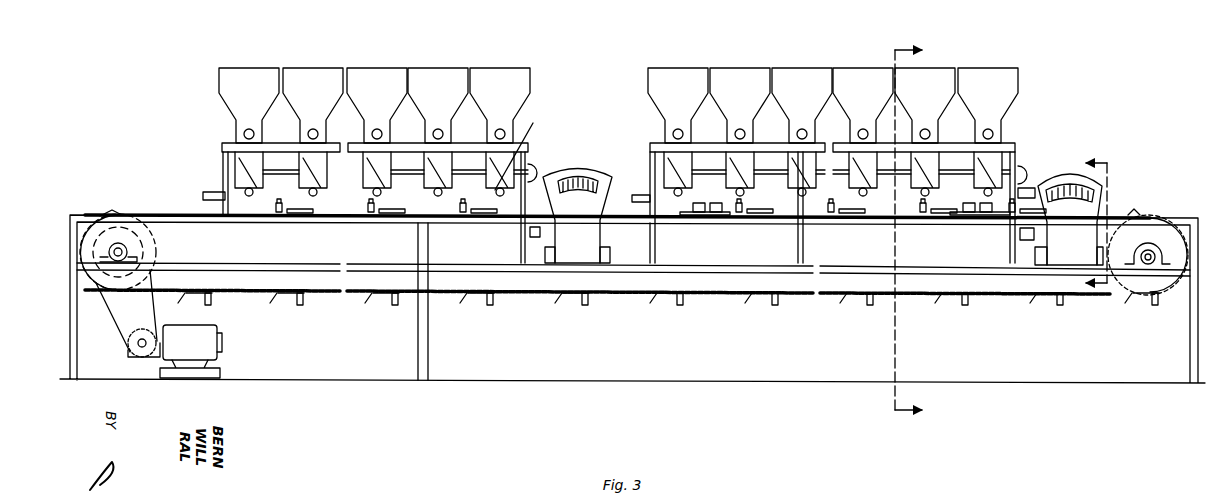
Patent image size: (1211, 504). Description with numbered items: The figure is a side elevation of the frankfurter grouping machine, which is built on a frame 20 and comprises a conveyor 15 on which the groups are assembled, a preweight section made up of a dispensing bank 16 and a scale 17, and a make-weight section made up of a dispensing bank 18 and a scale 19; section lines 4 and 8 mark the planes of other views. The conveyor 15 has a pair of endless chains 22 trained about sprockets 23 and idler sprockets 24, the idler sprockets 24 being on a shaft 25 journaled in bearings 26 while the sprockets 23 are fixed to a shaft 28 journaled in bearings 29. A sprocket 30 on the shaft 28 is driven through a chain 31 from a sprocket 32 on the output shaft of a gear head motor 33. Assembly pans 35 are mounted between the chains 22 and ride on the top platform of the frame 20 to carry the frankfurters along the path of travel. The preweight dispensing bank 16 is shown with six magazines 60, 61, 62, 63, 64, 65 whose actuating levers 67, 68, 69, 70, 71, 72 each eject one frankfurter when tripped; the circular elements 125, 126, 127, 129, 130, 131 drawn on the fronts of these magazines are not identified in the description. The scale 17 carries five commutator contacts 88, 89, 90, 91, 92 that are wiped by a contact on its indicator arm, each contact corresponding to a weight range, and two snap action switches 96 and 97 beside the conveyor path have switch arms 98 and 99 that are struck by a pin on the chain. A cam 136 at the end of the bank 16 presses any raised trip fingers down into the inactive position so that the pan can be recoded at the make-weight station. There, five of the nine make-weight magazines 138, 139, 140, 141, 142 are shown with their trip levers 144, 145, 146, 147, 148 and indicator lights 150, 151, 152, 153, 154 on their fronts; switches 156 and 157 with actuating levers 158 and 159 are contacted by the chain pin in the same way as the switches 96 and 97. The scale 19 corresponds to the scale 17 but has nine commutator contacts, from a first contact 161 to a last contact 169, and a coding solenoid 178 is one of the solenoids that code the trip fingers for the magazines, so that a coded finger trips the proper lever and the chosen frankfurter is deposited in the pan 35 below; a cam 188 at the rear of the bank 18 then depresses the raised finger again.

The section line 4- 4 is at (897, 228).
The section line 8- 8 is at (1096, 223).
The conveyor 15 is at (998, 302).
The dispensing bank 16 is at (834, 144).
The scale 17 is at (1060, 189).
The dispensing bank 18 is at (378, 147).
The scale 19 is at (565, 195).
The frame 20 is at (432, 335).
The endless chains 22 is at (1150, 217).
The sprockets 23 is at (152, 241).
The idler sprockets 24 is at (1128, 290).
The shaft 25 is at (1150, 264).
The bearings 26 is at (1158, 245).
The shaft 28 is at (108, 250).
The bearings 29 is at (135, 243).
The sprocket 30 is at (110, 228).
The chain 31 is at (118, 317).
The sprocket 32 is at (127, 343).
The gear head motor 33 is at (198, 348).
The assembly pans 35 is at (564, 302).
The magazine 60 is at (989, 119).
The magazine 61 is at (931, 117).
The magazine 62 is at (863, 119).
The magazine 63 is at (802, 115).
The magazine 64 is at (740, 117).
The magazine 65 is at (679, 115).
The actuating lever 67 is at (976, 199).
The actuating lever 68 is at (912, 198).
The actuating lever 69 is at (845, 203).
The actuating lever 70 is at (796, 192).
The actuating lever 71 is at (748, 194).
The actuating lever 72 is at (685, 193).
The commutator contact 88 is at (1092, 196).
The commutator contact 89 is at (1079, 180).
The commutator contact 90 is at (1069, 180).
The commutator contact 91 is at (1058, 180).
The commutator contact 92 is at (1050, 180).
The snap action switch 96 is at (992, 215).
The snap action switch 97 is at (965, 212).
The switch arm 98 is at (986, 213).
The switch arm 99 is at (972, 215).
The feed valve 125 is at (989, 129).
The feed valve 126 is at (926, 129).
The feed valve 127 is at (864, 129).
The feed valve 129 is at (803, 129).
The feed valve 130 is at (741, 129).
The feed valve 131 is at (679, 129).
The cam 136 is at (636, 195).
The magazine 138 is at (518, 120).
The magazine 139 is at (454, 117).
The magazine 140 is at (399, 115).
The magazine 141 is at (315, 113).
The magazine 142 is at (249, 113).
The trip lever 144 is at (540, 135).
The trip lever 145 is at (438, 209).
The trip lever 146 is at (376, 209).
The trip lever 147 is at (314, 209).
The trip lever 148 is at (256, 192).
The light 150 is at (501, 129).
The light 151 is at (439, 129).
The light 152 is at (378, 129).
The light 153 is at (314, 129).
The light 154 is at (250, 129).
The switch 156 is at (722, 212).
The switch 157 is at (706, 215).
The actuating lever 158 is at (716, 215).
The actuating lever 159 is at (697, 213).
The commutator contact 161 is at (602, 178).
The commutator contact 169 is at (552, 180).
The solenoid 178 is at (530, 232).
The cam 188 is at (210, 192).